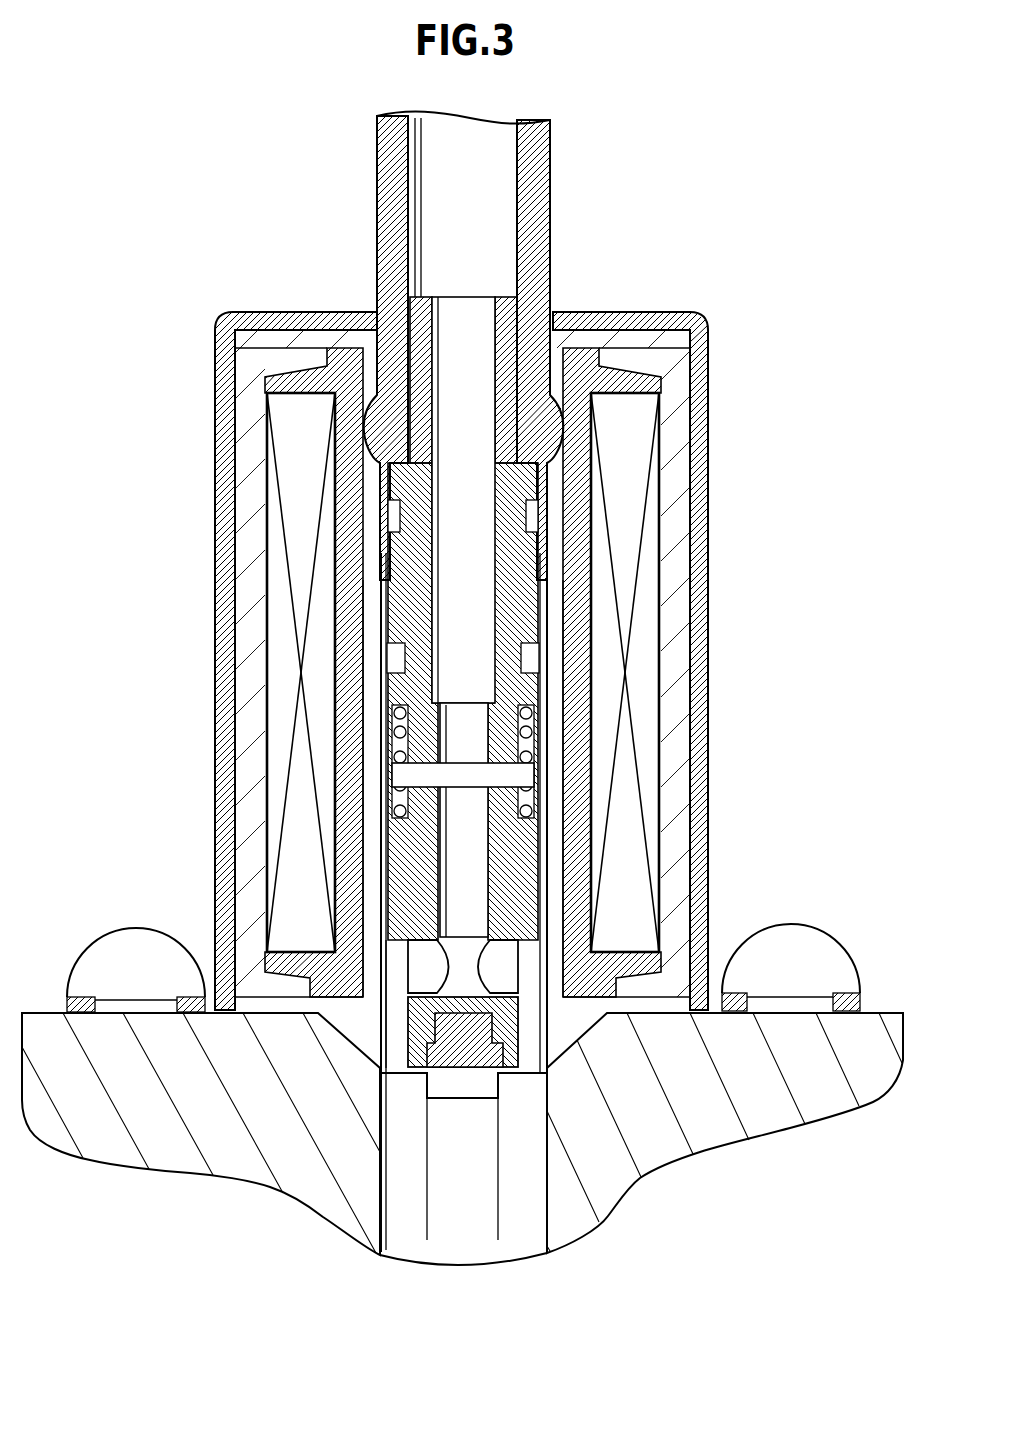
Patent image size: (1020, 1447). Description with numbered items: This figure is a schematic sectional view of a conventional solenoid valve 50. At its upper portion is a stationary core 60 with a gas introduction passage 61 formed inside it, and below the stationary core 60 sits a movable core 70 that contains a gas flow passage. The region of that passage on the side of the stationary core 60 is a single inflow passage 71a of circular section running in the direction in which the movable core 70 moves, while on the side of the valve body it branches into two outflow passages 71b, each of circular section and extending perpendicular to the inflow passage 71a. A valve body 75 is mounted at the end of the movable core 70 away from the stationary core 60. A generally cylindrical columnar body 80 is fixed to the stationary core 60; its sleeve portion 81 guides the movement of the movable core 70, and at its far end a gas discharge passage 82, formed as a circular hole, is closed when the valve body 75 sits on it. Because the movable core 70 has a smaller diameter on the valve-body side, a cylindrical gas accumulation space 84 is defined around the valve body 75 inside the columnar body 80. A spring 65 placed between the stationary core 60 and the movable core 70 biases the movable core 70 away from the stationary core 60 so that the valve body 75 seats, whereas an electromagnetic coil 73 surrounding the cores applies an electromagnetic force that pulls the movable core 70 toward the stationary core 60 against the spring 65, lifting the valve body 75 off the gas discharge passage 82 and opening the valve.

The solenoid valve 50 is at (675, 126).
The stationary core 60 is at (507, 318).
The gas introduction passage 61 is at (475, 315).
The spring 65 is at (400, 733).
The movable core 70 is at (528, 850).
The inflow passage 71a is at (473, 817).
The outflow passages 71b is at (432, 967).
The electromagnetic coil 73 is at (628, 485).
The valve body 75 is at (469, 1055).
The columnar body 80 is at (508, 1100).
The sleeve portion 81 is at (383, 780).
The gas discharge passage 82 is at (437, 1087).
The valve chamber 84 is at (395, 1037).